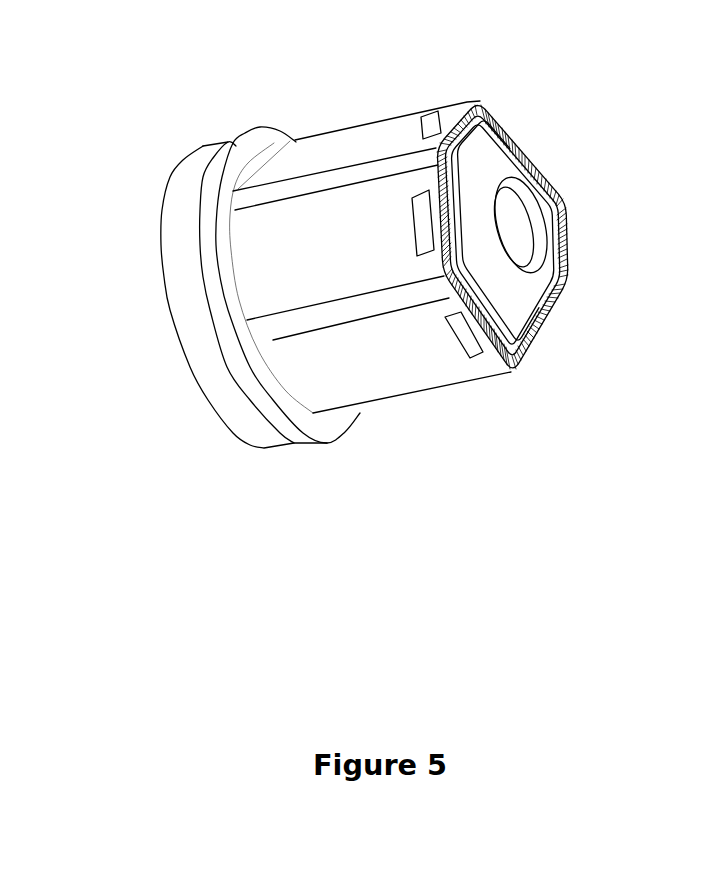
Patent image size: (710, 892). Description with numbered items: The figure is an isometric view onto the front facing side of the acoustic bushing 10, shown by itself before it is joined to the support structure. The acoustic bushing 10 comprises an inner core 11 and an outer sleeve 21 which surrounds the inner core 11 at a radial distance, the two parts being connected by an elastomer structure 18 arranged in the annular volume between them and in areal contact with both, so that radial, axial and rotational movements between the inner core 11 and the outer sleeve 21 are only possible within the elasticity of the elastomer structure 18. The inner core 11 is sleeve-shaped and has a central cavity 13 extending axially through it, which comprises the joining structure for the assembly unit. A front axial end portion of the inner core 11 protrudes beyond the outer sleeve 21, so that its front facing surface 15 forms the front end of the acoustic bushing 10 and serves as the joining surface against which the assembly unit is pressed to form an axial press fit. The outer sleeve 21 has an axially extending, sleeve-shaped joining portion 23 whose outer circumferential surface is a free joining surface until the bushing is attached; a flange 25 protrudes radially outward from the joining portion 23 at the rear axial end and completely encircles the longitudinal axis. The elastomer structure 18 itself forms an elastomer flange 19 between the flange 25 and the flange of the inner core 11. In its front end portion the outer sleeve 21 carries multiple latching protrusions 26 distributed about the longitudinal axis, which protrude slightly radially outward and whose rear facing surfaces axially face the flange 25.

The acoustic bushing 10 is at (196, 449).
The inner core 11 is at (510, 167).
The central cavity 13 is at (514, 230).
The front facing surface 15 is at (538, 288).
The elastomer structure 18 is at (493, 110).
The flange of the elastomer structure 19 is at (203, 146).
The outer sleeve 21 is at (400, 373).
The joining portion 23 is at (372, 257).
The flange 25 is at (253, 140).
The latching protrusions 26 is at (432, 118).